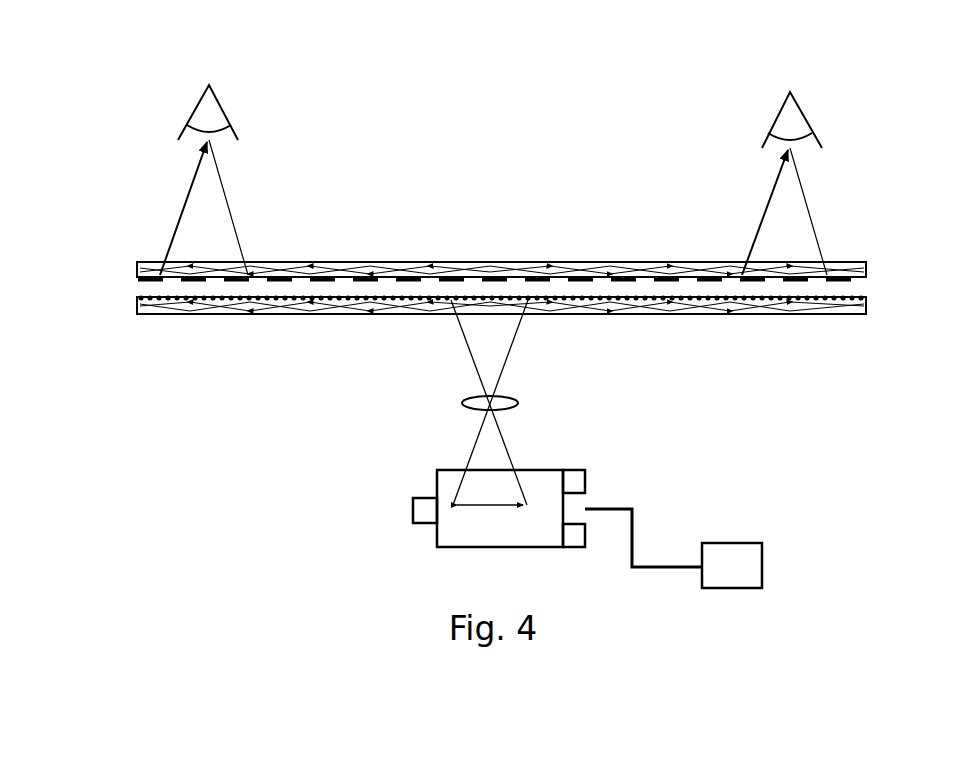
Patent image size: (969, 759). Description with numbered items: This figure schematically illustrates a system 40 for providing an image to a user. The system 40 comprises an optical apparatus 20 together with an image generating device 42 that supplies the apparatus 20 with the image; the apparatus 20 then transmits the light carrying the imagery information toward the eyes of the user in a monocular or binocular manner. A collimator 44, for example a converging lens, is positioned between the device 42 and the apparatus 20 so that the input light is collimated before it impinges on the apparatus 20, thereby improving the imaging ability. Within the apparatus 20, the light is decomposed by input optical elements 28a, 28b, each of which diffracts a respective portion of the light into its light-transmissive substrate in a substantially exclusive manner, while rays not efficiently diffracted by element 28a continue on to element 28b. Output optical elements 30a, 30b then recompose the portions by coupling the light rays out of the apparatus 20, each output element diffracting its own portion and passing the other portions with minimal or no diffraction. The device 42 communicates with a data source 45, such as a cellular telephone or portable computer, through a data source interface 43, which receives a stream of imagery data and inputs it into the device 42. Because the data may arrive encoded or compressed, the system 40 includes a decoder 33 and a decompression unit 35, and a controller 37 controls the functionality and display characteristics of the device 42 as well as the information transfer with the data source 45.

The system 40 is at (502, 25).
The optical apparatus 20 is at (76, 272).
The output optical element 30b is at (137, 280).
The output optical element 30a is at (137, 298).
The input optical element 28b is at (515, 275).
The input optical element 28a is at (418, 302).
The collimator 44 is at (511, 405).
The image generating device 42 is at (450, 482).
The decoder 33 is at (578, 478).
The decompression unit 35 is at (573, 537).
The controller 37 is at (429, 512).
The data source interface 43 is at (643, 538).
The data source 45 is at (732, 565).